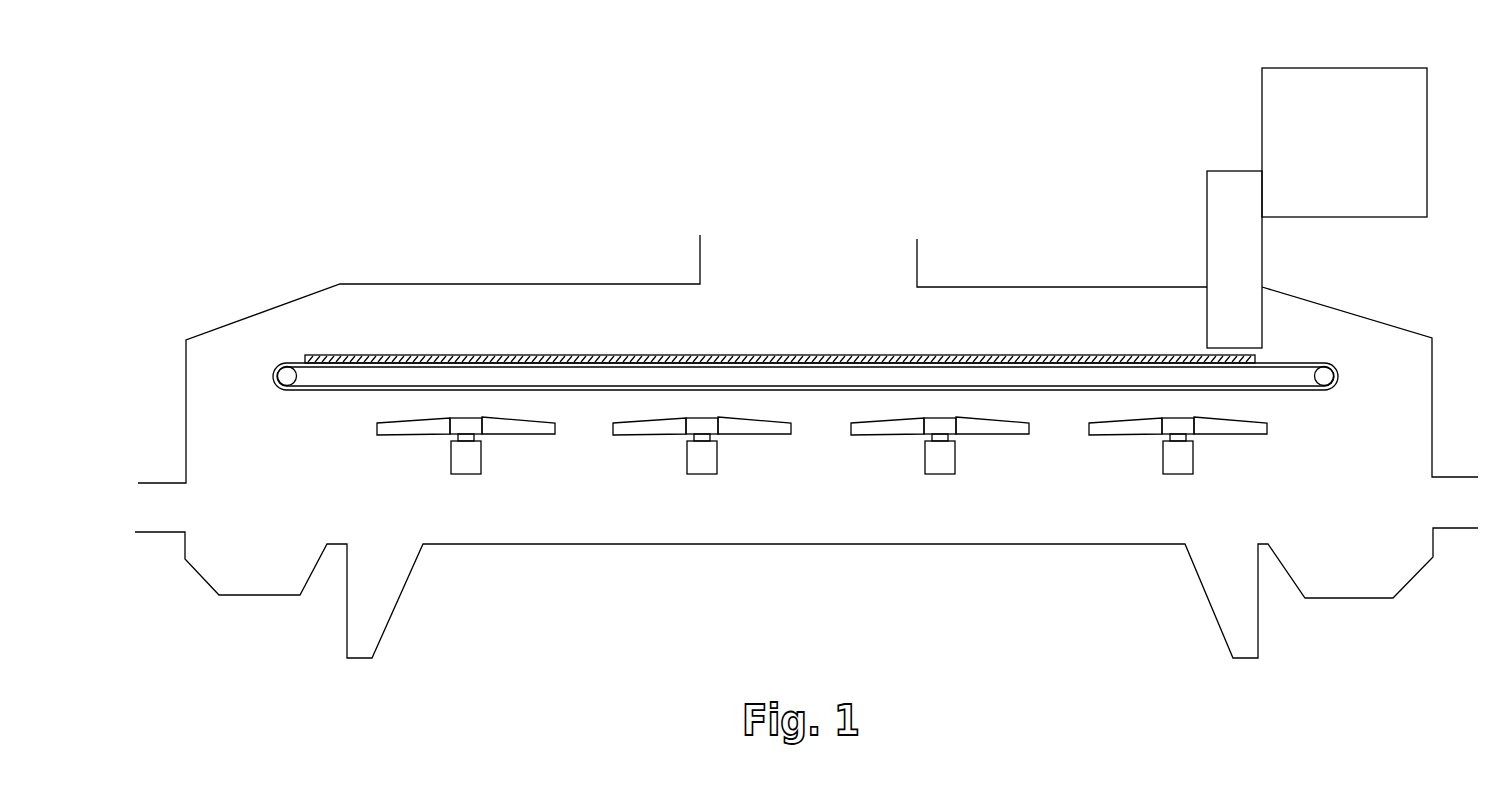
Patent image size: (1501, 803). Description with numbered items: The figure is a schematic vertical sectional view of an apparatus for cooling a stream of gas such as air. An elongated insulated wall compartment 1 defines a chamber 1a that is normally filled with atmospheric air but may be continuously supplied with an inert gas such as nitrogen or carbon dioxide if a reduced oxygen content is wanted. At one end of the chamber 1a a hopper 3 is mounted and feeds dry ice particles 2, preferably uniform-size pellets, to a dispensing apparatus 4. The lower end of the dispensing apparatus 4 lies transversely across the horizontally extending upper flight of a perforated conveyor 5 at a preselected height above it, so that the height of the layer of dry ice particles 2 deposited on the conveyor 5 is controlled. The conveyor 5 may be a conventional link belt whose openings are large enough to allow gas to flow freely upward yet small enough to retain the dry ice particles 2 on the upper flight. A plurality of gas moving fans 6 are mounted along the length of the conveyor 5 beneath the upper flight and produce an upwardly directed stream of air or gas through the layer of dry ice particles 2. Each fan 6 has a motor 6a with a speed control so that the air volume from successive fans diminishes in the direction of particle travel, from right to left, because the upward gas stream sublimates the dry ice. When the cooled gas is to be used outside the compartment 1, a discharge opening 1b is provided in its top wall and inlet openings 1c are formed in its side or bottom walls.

The insulated wall compartment 1 is at (480, 250).
The chamber 1a is at (933, 335).
The discharge opening 1b is at (796, 264).
The inlet openings 1c is at (163, 535).
The dry ice particles 2 is at (1098, 348).
The hopper 3 is at (1335, 155).
The dispensing apparatus 4 is at (1222, 267).
The perforated conveyor 5 is at (1282, 360).
The gas moving fans 6 is at (628, 432).
The motor 6a is at (475, 458).